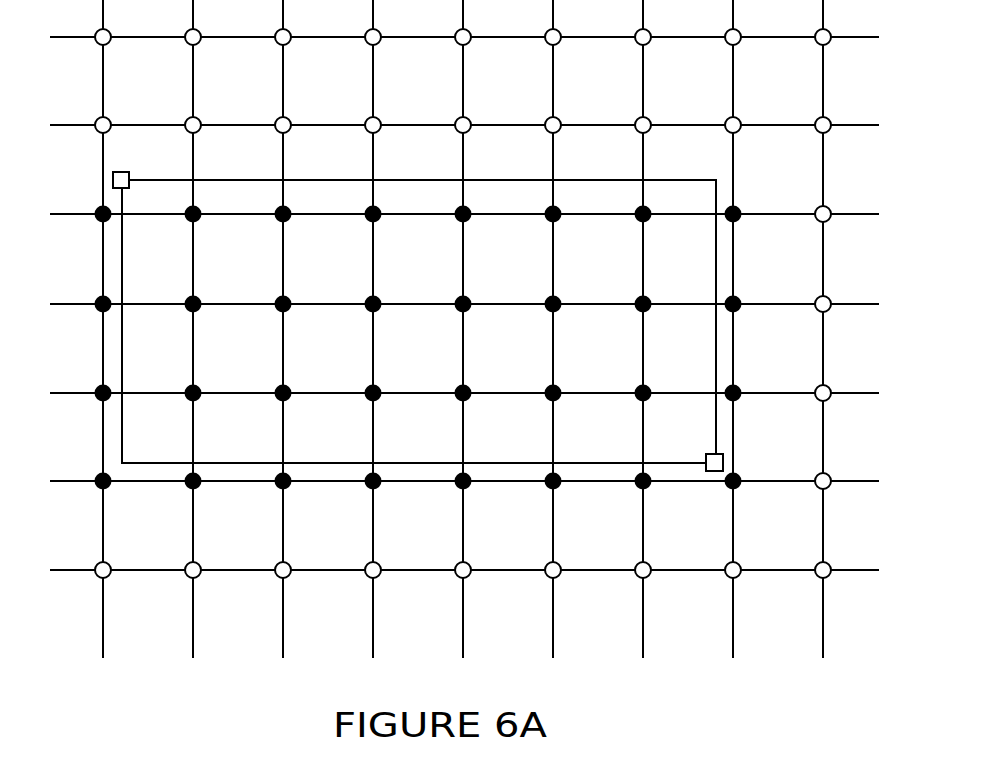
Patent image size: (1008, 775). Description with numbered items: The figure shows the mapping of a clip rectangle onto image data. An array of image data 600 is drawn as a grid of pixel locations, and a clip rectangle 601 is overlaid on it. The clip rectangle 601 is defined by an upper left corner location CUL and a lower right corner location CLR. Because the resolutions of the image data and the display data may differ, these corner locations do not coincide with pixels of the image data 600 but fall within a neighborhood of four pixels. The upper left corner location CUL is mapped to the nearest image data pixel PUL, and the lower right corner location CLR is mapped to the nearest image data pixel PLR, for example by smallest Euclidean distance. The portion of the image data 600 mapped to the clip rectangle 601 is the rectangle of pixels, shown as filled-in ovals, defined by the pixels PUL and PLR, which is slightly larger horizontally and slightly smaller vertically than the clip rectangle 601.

The array of image data 600 is at (850, 123).
The clip rectangle 601 is at (717, 196).
The upper left corner location CUL is at (133, 165).
The upper left image data pixel PUL is at (81, 235).
The lower right corner location CLR is at (691, 446).
The lower right image data pixel PLR is at (751, 500).